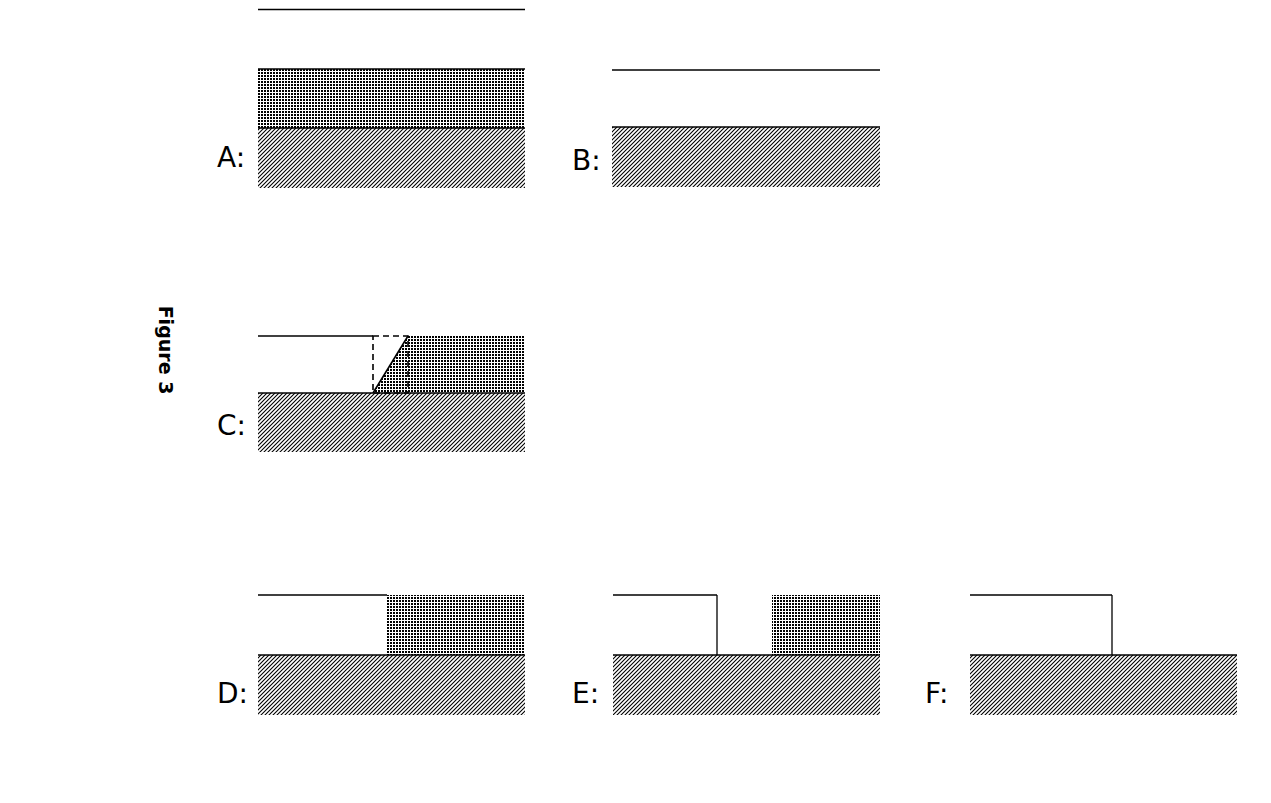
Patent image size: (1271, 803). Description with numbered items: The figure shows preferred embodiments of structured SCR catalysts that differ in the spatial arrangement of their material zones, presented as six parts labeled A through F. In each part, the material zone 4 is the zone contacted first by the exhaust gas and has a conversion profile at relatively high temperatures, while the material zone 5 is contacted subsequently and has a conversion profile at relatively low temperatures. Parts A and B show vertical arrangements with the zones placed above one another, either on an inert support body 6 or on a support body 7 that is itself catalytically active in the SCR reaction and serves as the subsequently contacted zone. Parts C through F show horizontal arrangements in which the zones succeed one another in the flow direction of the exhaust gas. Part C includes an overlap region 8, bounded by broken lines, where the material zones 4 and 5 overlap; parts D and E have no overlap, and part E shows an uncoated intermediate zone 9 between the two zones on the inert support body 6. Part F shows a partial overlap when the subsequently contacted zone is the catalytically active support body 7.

The material zone contacted first by the exhaust gas 4 is at (747, 333).
The material zone contacted subsequently by the exhaust gas 5 is at (569, 362).
The inert support body 6 is at (569, 421).
The SCR-catalytically active support body 7 is at (924, 421).
The overlap region 8 is at (390, 331).
The uncoated intermediate zone 9 is at (739, 625).